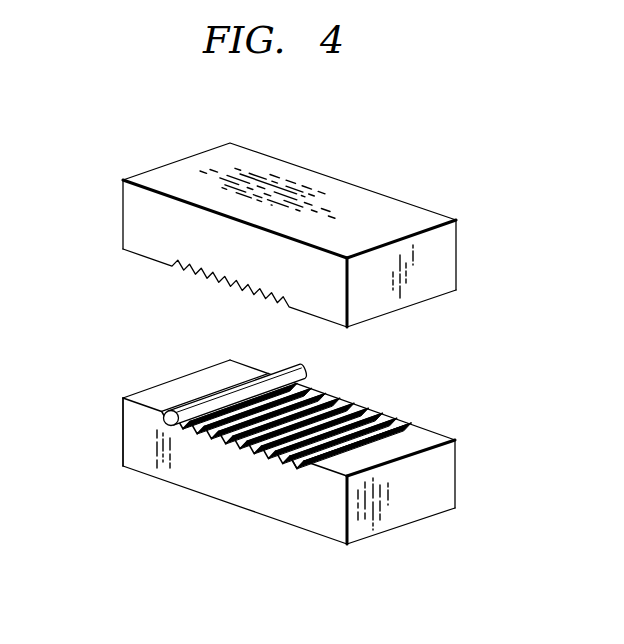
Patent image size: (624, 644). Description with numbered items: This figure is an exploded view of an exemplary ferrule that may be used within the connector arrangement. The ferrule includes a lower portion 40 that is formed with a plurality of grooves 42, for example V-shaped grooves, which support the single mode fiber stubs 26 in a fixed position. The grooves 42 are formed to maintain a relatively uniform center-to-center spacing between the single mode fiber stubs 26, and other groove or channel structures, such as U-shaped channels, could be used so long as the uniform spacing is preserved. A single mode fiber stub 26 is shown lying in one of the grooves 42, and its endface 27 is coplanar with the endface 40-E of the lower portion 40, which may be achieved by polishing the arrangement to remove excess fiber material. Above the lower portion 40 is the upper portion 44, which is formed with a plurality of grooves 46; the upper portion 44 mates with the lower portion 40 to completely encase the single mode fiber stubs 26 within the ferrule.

The single mode fiber stub 26 is at (181, 407).
The endface of single mode fiber stub 27 is at (294, 463).
The lower portion 40 is at (403, 502).
The endface of lower portion 40-E is at (148, 443).
The grooves 42 is at (258, 462).
The upper portion 44 is at (372, 208).
The grooves 46 is at (184, 263).